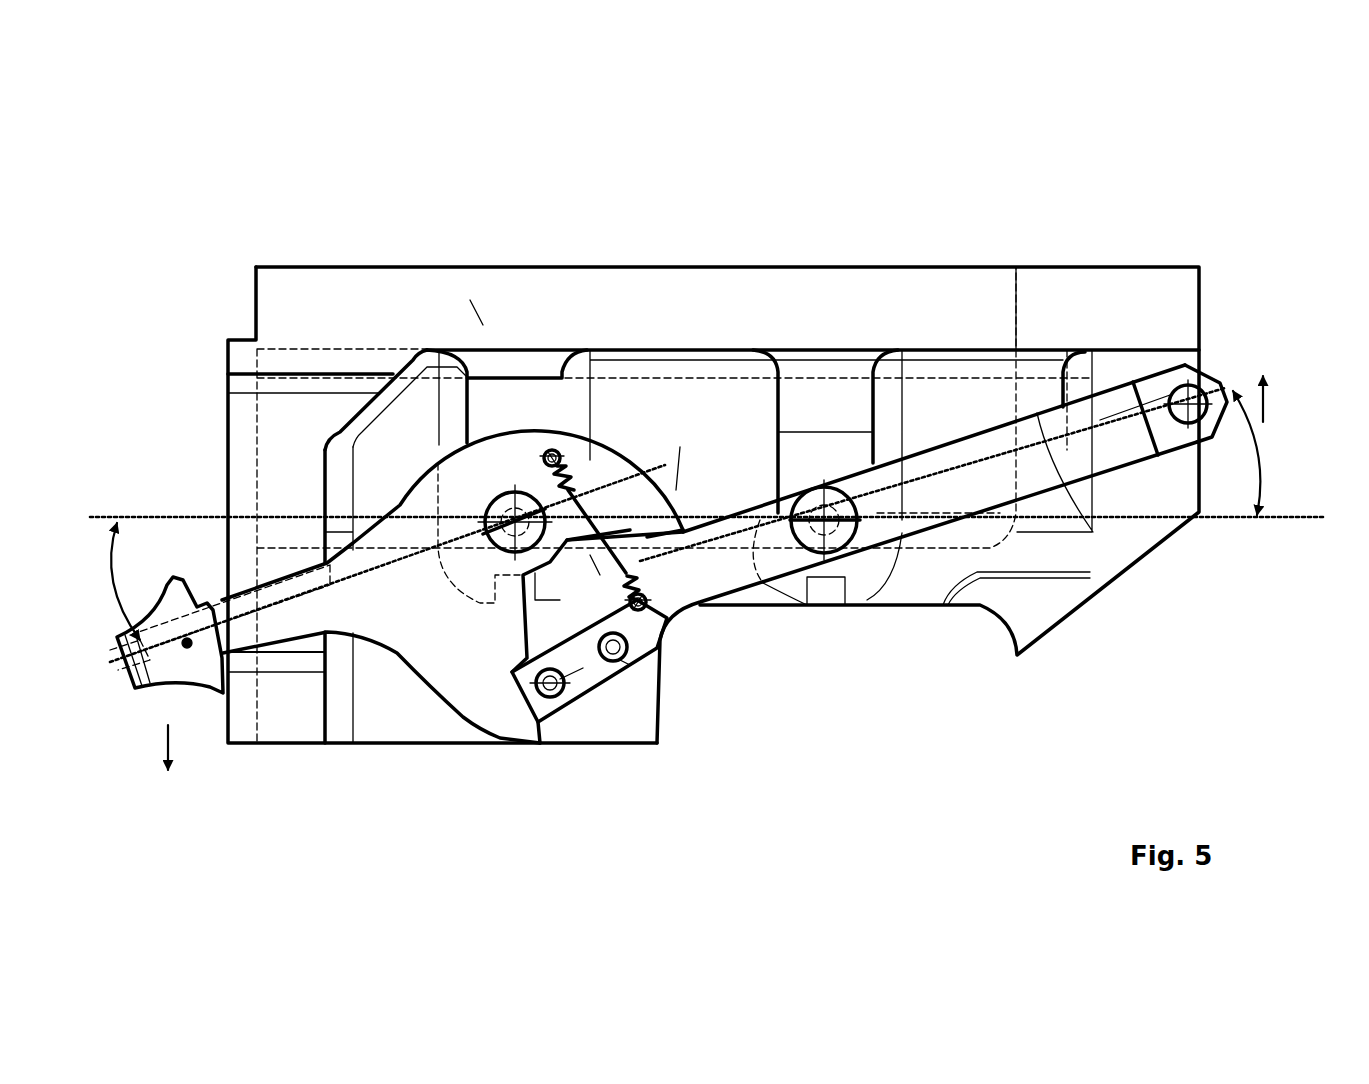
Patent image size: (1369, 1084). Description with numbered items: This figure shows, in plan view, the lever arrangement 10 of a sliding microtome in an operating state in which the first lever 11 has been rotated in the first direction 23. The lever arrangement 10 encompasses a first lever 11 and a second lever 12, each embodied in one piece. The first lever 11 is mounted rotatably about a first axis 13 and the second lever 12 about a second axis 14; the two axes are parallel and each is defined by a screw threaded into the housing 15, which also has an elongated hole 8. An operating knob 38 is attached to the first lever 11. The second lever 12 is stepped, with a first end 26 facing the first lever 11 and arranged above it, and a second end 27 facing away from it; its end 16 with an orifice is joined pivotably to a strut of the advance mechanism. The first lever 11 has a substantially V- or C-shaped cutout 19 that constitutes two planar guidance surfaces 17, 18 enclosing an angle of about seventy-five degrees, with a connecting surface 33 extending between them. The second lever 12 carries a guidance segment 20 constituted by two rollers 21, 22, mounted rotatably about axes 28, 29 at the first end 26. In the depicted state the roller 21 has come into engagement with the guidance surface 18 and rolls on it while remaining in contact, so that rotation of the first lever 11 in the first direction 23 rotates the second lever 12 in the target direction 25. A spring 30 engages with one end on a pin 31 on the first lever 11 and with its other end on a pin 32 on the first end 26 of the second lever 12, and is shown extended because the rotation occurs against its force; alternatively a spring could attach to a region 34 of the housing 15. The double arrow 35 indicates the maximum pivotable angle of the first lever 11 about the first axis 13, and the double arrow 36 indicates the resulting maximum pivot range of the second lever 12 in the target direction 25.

The elongated hole 8 is at (235, 430).
The lever arrangement 10 is at (272, 229).
The first lever 11 is at (458, 640).
The second lever 12 is at (962, 477).
The first axis 13 is at (510, 487).
The second axis 14 is at (820, 487).
The housing 15 is at (1105, 327).
The end of second lever facing away from first lever 16 is at (1197, 392).
The guidance surface 17 is at (693, 593).
The guidance surface 18 is at (600, 575).
The V-shaped cutout 19 is at (570, 600).
The guidance segment 20 is at (607, 673).
The roller 21 is at (543, 700).
The roller 22 is at (650, 690).
The first direction 23 is at (163, 733).
The target direction 25 is at (1268, 400).
The first end of second lever 26 is at (680, 447).
The second end of second lever 27 is at (1113, 405).
The axis for roller 21 28 is at (586, 676).
The axis for roller 22 29 is at (623, 663).
The spring 30 is at (572, 455).
The pin on first lever 31 is at (553, 453).
The pin on second lever 32 is at (677, 607).
The connecting surface 33 is at (640, 612).
The region of housing 34 is at (483, 325).
The maximum pivotable angle of first lever 35 is at (117, 590).
The angle of rotation of second lever 36 is at (1262, 452).
The operating knob 38 is at (140, 692).